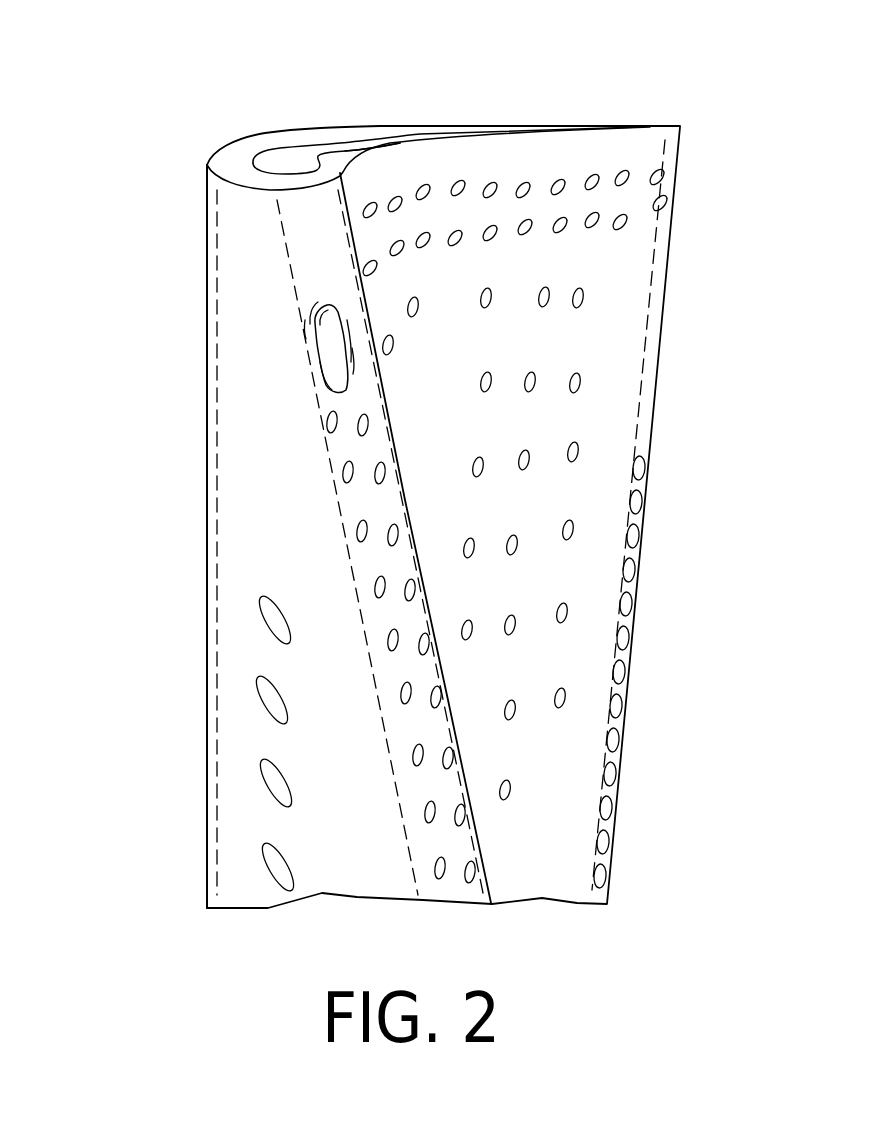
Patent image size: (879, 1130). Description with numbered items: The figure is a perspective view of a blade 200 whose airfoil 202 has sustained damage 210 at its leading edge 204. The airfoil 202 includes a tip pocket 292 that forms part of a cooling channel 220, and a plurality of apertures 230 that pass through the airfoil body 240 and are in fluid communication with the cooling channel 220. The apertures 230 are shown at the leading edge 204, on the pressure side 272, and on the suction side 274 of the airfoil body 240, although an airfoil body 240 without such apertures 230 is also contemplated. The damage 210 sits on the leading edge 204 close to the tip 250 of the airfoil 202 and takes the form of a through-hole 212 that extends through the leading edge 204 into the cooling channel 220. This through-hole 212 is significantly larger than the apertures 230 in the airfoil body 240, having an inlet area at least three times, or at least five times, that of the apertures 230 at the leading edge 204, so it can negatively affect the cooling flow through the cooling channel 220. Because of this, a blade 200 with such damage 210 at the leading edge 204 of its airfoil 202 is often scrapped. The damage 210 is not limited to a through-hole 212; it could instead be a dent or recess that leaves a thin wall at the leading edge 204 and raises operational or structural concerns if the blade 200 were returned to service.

The blade 200 is at (183, 255).
The airfoil 202 is at (280, 478).
The leading edge 204 is at (308, 237).
The damage 210 is at (310, 351).
The through-hole 212 is at (333, 362).
The cooling channel 220 is at (185, 66).
The apertures 230 is at (421, 189).
The airfoil body 240 is at (497, 167).
The tip 250 is at (372, 145).
The pressure side 272 is at (567, 147).
The suction side 274 is at (207, 555).
The tip pocket 292 is at (293, 162).